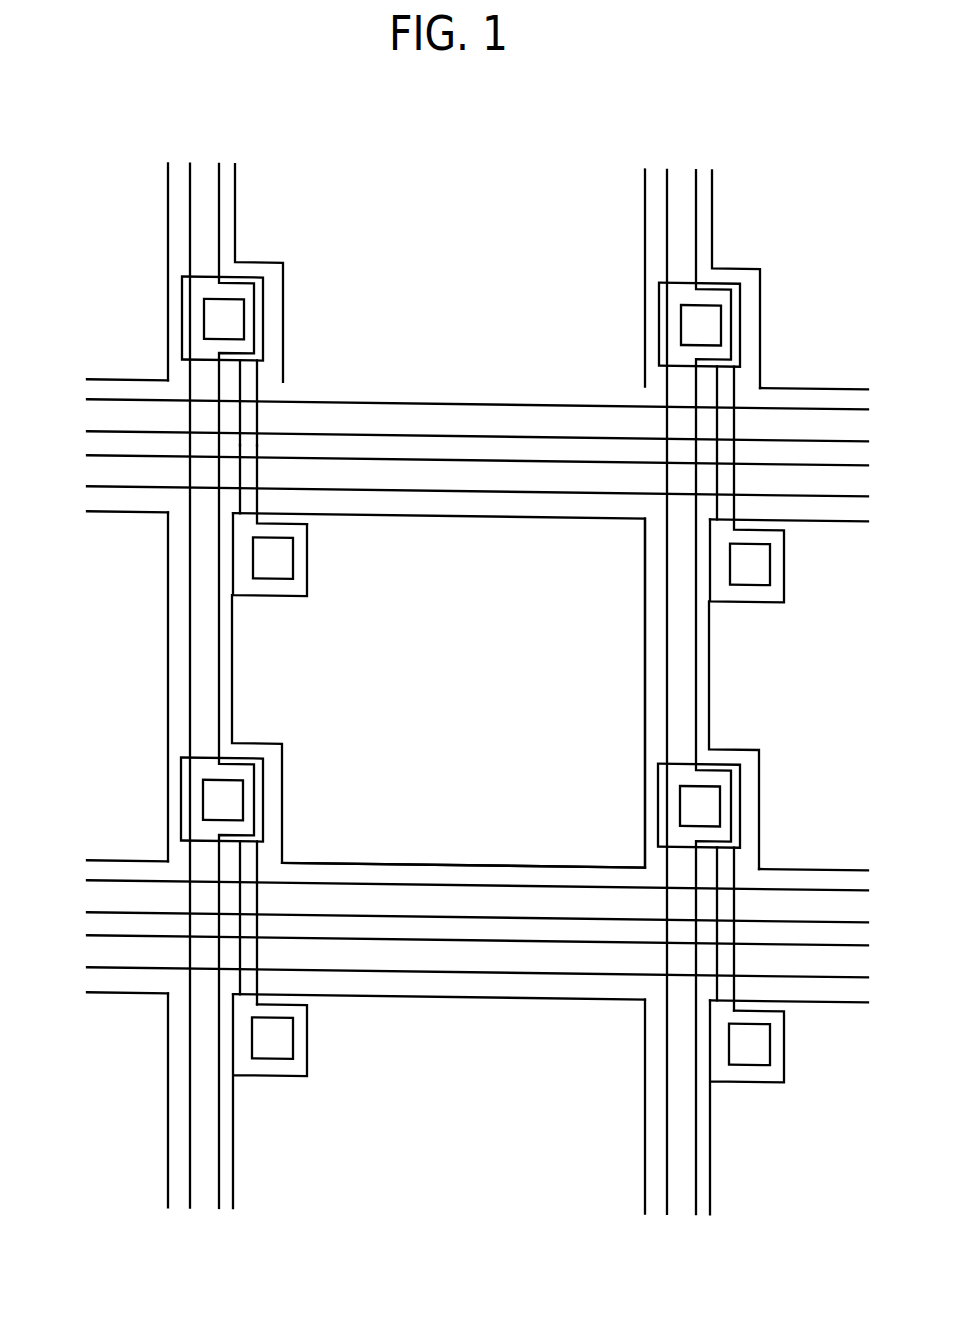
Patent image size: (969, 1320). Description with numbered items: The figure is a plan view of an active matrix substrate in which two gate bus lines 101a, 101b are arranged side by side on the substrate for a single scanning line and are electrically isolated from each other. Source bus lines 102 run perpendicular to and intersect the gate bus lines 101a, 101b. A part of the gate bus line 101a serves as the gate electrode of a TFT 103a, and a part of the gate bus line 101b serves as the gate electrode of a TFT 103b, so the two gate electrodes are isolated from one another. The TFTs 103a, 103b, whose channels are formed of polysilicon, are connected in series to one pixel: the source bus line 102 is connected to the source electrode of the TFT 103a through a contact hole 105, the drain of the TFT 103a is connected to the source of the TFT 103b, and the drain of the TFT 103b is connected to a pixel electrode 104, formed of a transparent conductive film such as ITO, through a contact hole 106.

The gate bus line 101a is at (102, 419).
The gate bus line 101b is at (93, 470).
The source bus line 102 is at (233, 699).
The TFT 103a is at (260, 416).
The TFT 103b is at (258, 473).
The pixel electrode 104 is at (510, 516).
The contact hole 105 is at (230, 300).
The contact hole 106 is at (293, 571).